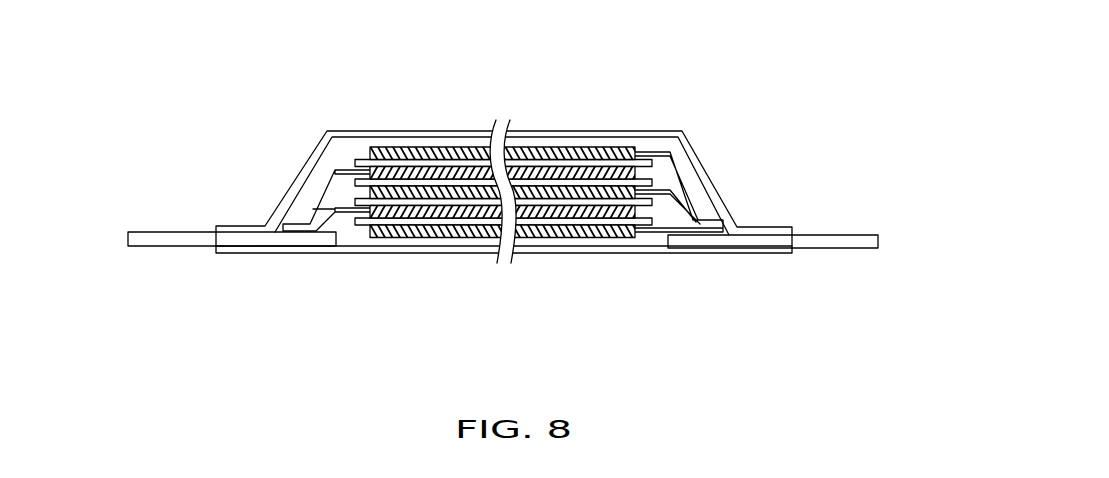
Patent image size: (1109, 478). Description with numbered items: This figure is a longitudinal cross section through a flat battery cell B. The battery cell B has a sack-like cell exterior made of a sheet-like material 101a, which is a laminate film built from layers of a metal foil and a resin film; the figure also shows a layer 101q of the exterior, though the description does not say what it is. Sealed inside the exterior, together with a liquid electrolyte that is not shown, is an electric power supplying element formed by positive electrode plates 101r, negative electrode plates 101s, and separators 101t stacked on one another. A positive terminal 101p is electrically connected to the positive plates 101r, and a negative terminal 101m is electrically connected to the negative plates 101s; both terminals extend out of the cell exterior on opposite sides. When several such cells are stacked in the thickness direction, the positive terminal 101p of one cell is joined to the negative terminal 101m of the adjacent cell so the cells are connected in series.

The sheet-like material 101a is at (618, 131).
The inner resin layer 101q is at (435, 138).
The positive terminal 101p is at (180, 231).
The negative terminal 101m is at (827, 235).
The separators 101t is at (657, 156).
The negative electrode plates 101s is at (387, 236).
The positive electrode plates 101r is at (555, 182).
The battery cell B is at (569, 106).